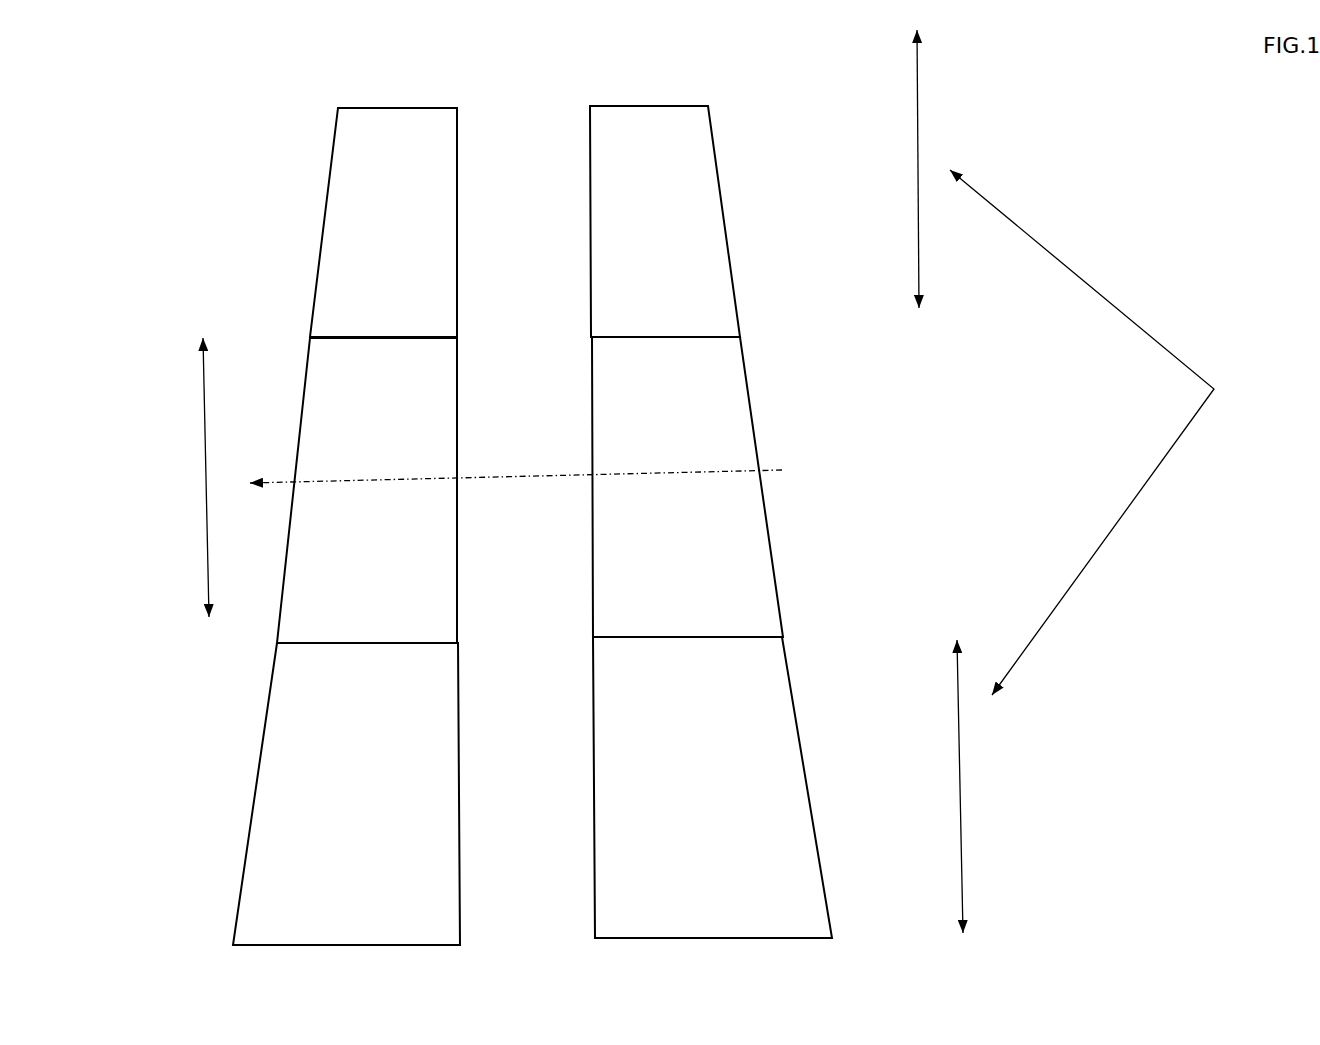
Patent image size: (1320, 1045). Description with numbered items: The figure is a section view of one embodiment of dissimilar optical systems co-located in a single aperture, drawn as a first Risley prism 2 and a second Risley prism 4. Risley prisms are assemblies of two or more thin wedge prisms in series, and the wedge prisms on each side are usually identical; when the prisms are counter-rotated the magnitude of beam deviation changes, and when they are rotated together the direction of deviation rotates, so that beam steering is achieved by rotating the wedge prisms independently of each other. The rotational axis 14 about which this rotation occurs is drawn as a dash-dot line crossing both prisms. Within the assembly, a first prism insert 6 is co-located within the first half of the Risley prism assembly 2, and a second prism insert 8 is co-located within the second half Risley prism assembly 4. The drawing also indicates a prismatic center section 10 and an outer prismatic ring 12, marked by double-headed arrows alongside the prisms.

The first Risley prism 2 is at (346, 526).
The second Risley prism 4 is at (711, 522).
The first prism insert 6 is at (367, 490).
The second prism insert 8 is at (687, 487).
The prismatic center section 10 is at (190, 468).
The outer prismatic ring 12 is at (1107, 432).
The rotational axis 14 is at (803, 474).